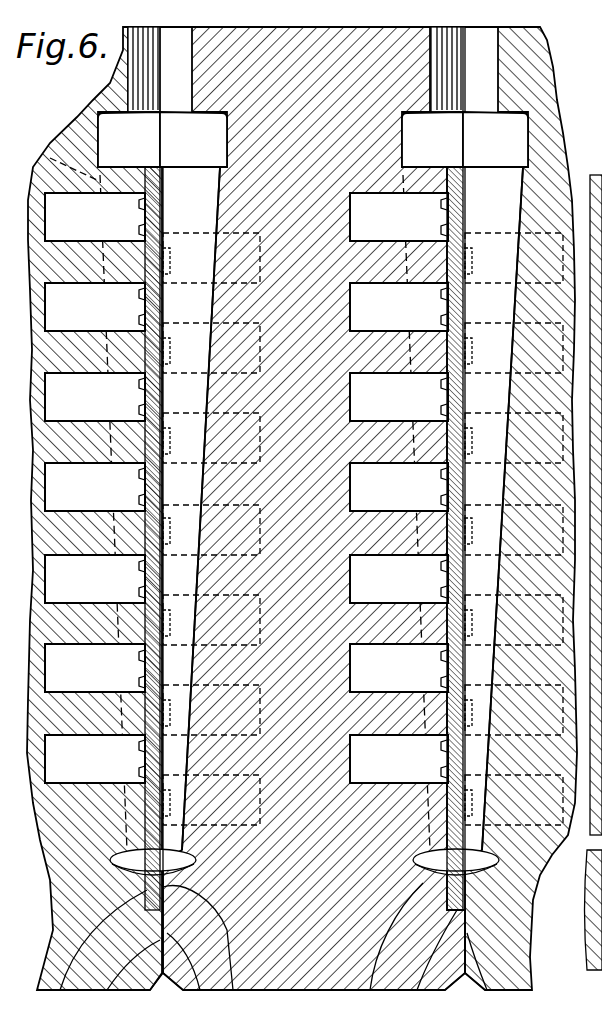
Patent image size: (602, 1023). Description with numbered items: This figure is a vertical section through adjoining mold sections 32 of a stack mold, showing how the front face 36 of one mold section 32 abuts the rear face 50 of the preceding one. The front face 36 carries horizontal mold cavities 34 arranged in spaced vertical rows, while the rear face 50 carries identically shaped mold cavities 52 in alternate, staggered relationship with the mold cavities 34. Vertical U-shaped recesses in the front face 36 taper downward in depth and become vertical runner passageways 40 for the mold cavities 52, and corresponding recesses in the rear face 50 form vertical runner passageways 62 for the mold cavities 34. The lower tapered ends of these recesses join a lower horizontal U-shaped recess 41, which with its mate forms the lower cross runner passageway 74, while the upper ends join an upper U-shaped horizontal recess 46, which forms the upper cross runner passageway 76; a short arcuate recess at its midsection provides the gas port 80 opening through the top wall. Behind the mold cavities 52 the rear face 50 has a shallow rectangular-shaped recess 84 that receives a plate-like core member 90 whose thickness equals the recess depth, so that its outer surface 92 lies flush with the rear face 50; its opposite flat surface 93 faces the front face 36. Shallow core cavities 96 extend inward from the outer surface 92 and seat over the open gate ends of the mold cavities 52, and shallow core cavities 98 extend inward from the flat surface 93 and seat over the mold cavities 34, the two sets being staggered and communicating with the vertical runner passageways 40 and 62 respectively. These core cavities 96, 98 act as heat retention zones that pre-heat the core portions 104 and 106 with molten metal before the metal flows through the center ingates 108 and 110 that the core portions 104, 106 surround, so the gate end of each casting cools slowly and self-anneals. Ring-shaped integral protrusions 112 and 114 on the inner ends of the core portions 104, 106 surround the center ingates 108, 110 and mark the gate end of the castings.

The mold section 32 is at (128, 27).
The gas port 80 is at (208, 36).
The upper cross runner passageway 76 is at (98, 113).
The upper U-shaped horizontal recess 46 is at (527, 117).
The vertical runner passageway 40 is at (220, 177).
The vertical runner passageway 62 is at (422, 827).
The flat surface of core member 93 is at (143, 173).
The outer surface of core member 92 is at (163, 185).
The core portion 104 is at (163, 197).
The mold cavity 52 is at (246, 488).
The integral protrusion 112 is at (143, 206).
The center ingate 108 is at (143, 222).
The core cavity 96 is at (170, 218).
The core cavity 98 is at (143, 265).
The core portion 106 is at (167, 250).
The integral protrusion 114 is at (168, 268).
The mold cavity 34 is at (382, 526).
The center ingate 110 is at (339, 529).
The shallow rectangular-shaped recess 84 is at (135, 908).
The core member 90 is at (62, 990).
The front face 36 is at (107, 990).
The rear face 50 is at (199, 990).
The lower cross runner passageway 74 is at (230, 990).
The lower horizontal U-shaped recess 41 is at (498, 870).